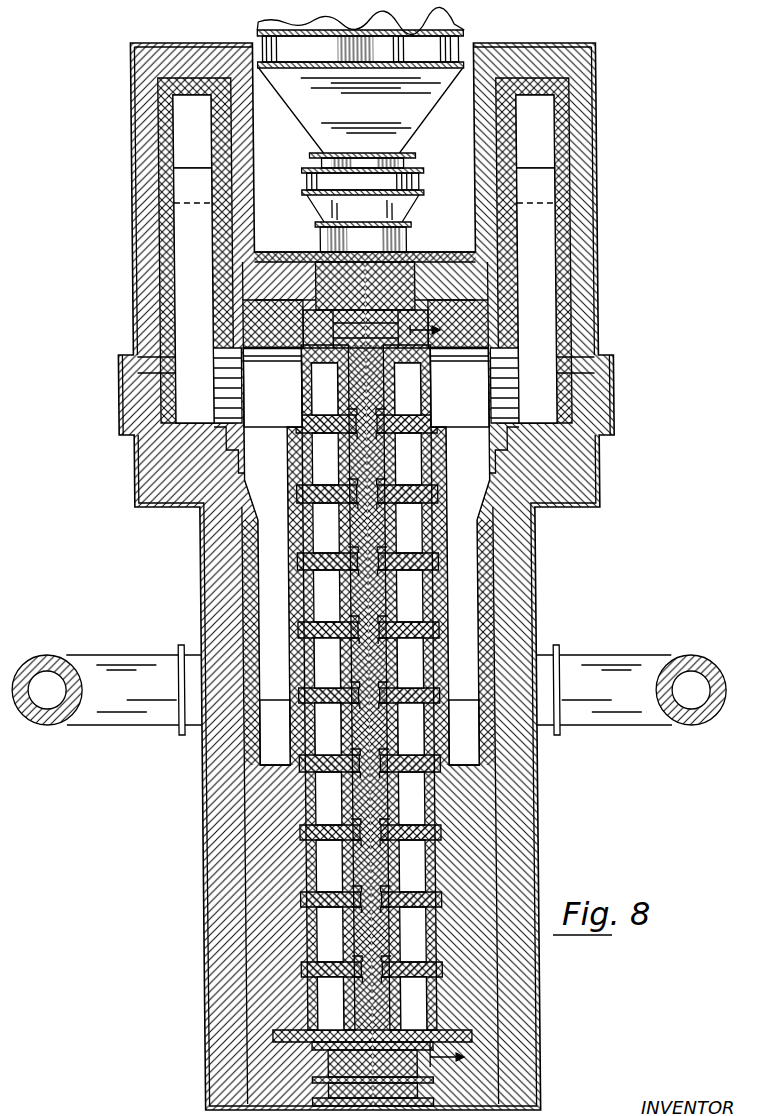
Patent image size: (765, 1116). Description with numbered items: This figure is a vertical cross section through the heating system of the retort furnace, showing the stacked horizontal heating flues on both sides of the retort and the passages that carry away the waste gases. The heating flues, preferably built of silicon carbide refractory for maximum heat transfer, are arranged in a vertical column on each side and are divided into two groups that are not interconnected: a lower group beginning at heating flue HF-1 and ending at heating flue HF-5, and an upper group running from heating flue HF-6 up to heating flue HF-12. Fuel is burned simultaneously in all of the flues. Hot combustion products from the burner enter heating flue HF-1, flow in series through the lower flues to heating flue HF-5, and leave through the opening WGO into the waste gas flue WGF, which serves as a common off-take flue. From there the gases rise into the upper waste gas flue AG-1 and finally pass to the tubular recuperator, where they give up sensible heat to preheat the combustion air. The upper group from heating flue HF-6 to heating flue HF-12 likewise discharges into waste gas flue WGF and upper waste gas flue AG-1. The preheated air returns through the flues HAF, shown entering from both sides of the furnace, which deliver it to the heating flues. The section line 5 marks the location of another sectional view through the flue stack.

The upper waste gas flue AG-1 is at (364, 131).
The waste gas flue WGF is at (367, 466).
The waste gas opening WGO is at (425, 396).
The heating flue HF-12 is at (374, 389).
The heating flue HF-6 is at (373, 663).
The heating flue HF-5 is at (373, 729).
The heating flue HF-1 is at (377, 1003).
The downcomer flue / air riser HAF is at (608, 716).
The section line 5 is at (440, 697).